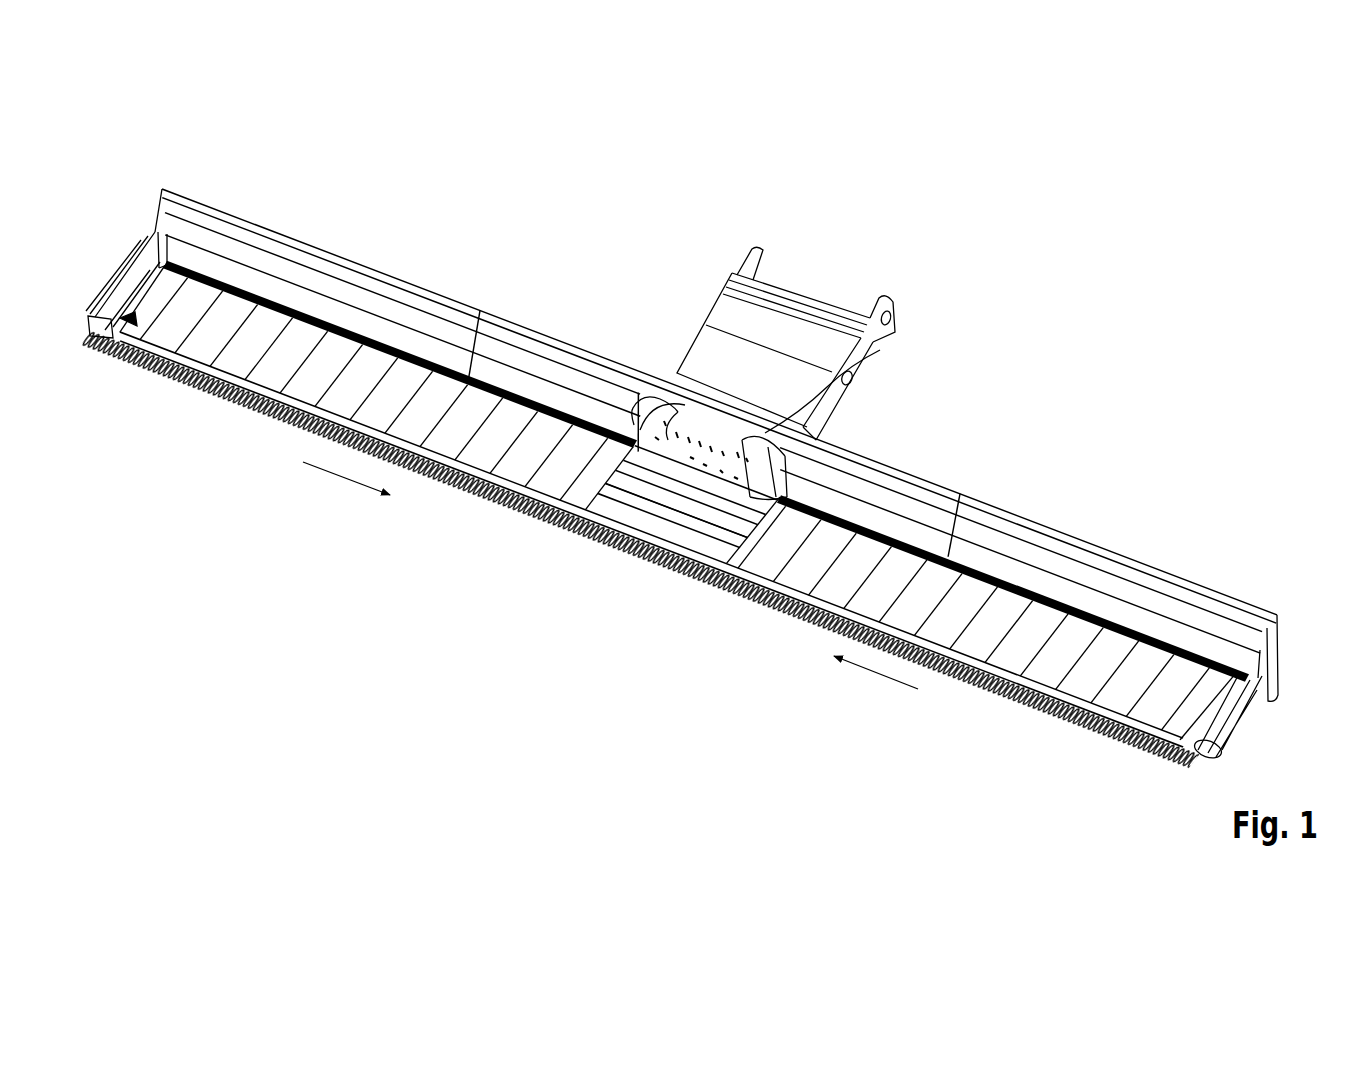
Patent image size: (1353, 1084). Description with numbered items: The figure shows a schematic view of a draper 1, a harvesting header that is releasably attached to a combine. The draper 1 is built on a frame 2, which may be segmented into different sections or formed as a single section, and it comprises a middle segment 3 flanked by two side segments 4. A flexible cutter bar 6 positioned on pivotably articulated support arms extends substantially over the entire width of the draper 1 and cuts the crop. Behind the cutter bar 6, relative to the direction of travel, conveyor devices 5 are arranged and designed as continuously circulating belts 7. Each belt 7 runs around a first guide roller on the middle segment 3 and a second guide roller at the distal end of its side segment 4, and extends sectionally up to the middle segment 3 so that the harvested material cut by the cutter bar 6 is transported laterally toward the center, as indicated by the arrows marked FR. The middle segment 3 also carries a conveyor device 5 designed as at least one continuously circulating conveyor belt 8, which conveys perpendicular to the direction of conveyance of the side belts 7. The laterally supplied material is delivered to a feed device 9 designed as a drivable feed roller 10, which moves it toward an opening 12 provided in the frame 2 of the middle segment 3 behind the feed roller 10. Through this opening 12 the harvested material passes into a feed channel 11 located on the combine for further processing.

The draper 1 is at (306, 524).
The frame 2 is at (246, 249).
The middle segment 3 is at (609, 358).
The side segment 4 is at (341, 257).
The conveyor device 5 is at (675, 534).
The flexible cutter bar 6 is at (212, 400).
The conveyor belt 7 is at (550, 482).
The conveyor belt 8 is at (634, 507).
The feed device 9 is at (699, 499).
The feed roller 10 is at (747, 442).
The feed channel 11 is at (843, 293).
The opening 12 is at (880, 350).